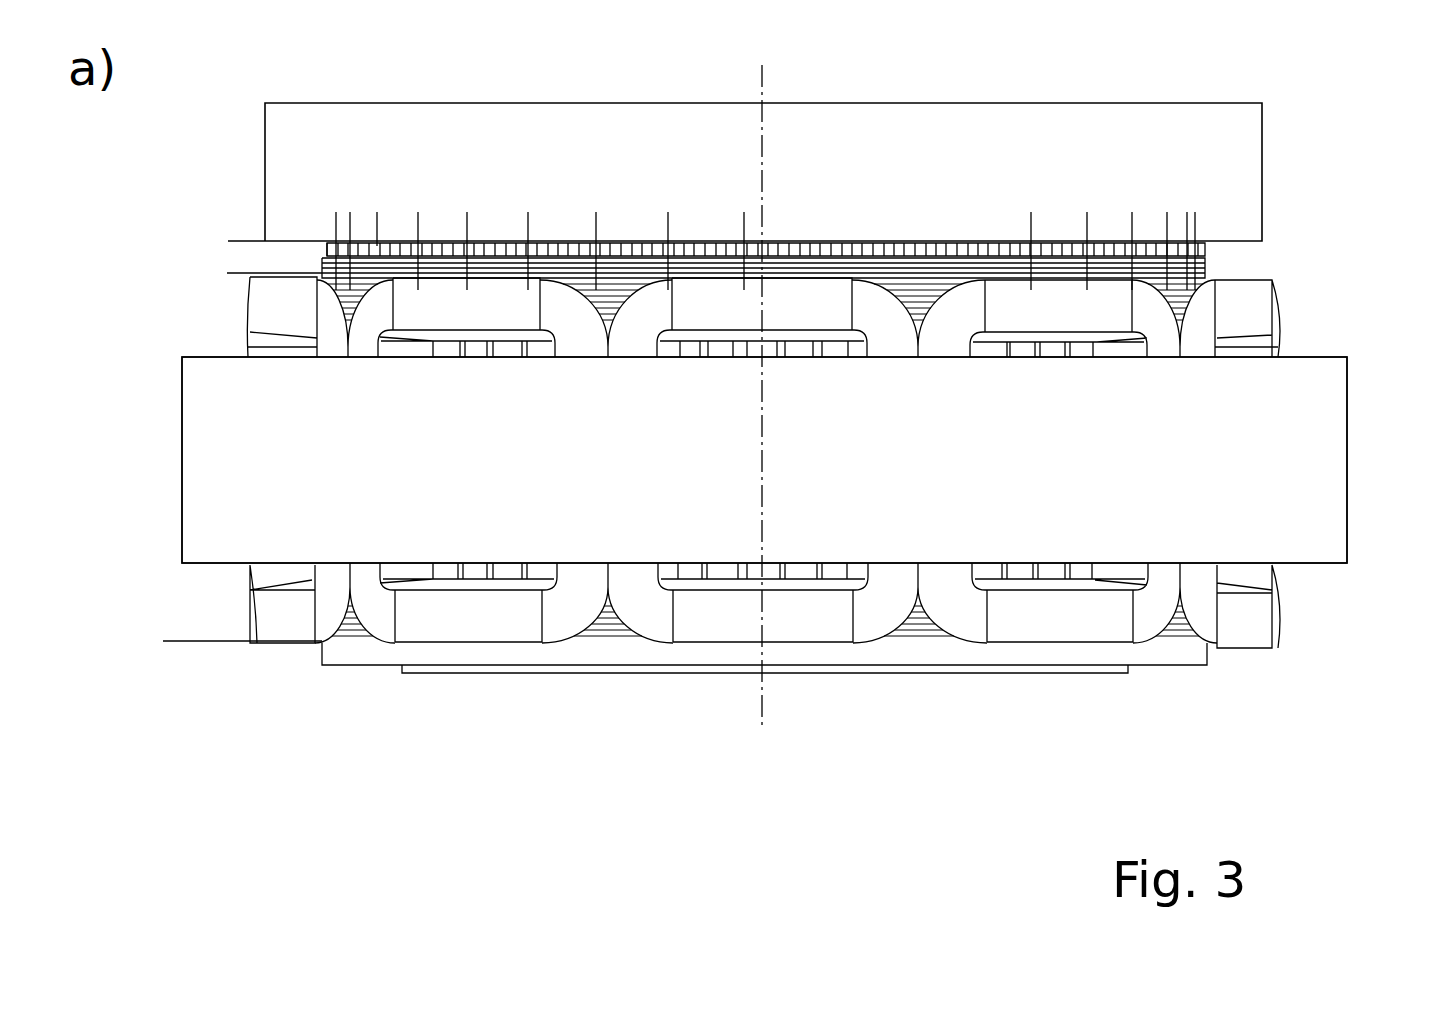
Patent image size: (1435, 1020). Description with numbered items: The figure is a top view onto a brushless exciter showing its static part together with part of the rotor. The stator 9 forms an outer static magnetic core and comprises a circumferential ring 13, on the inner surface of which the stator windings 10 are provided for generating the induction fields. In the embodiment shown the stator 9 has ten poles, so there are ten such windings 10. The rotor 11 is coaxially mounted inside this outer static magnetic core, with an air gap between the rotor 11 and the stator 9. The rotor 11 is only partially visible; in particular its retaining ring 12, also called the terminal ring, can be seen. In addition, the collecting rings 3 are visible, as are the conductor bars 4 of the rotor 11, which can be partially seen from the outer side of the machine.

The collecting rings 3 is at (1207, 268).
The conductor bars 4 is at (745, 358).
The stator 9 is at (764, 460).
The stator windings 10 is at (1035, 612).
The rotor 11 is at (1165, 652).
The retaining ring 12 is at (1245, 188).
The circumferential ring 13 is at (1335, 452).